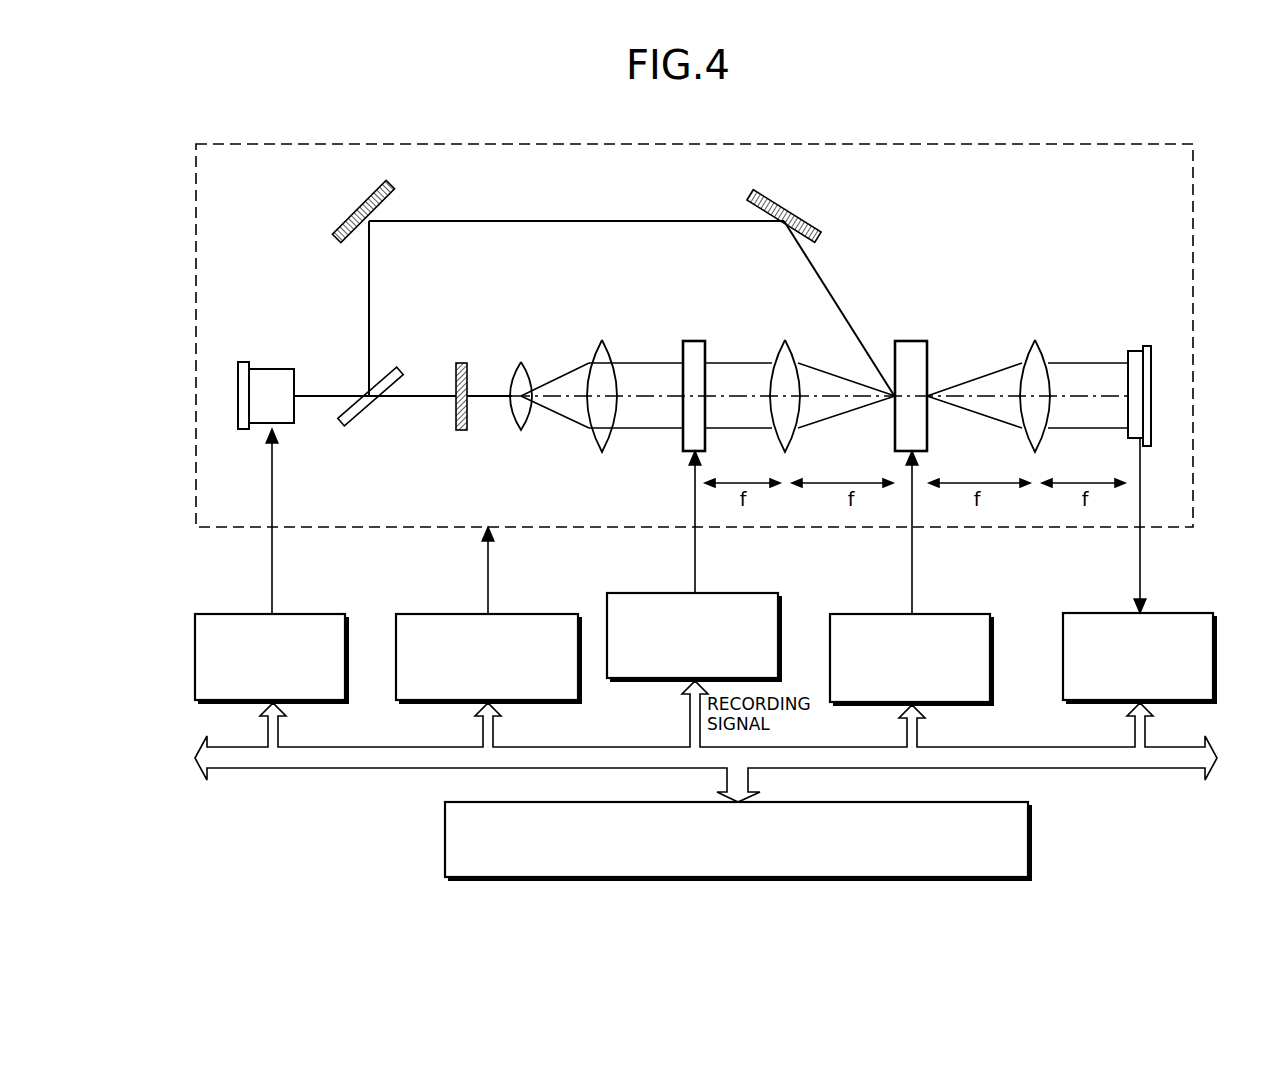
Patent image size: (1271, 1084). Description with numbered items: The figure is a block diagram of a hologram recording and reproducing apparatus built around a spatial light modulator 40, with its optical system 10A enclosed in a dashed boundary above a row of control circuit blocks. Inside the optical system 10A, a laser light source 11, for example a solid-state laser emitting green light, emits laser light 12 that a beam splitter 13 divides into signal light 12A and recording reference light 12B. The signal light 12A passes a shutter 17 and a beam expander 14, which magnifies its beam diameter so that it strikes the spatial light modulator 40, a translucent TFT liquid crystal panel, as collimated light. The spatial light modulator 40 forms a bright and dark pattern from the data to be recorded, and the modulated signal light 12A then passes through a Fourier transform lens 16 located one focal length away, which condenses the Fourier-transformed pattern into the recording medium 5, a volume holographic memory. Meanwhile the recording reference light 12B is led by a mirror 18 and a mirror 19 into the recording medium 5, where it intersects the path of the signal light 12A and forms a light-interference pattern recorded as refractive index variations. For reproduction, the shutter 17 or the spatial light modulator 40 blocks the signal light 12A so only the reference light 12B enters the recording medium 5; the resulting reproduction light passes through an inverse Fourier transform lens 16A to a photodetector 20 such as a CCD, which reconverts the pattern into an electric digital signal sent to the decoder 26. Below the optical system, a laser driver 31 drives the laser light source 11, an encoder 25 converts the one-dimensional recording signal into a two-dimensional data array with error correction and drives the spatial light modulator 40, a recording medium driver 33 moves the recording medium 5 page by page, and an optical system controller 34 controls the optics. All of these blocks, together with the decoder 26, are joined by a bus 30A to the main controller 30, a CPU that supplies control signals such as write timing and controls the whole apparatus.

The optical system 10A is at (1193, 198).
The laser light source 11 is at (272, 369).
The laser light 12 is at (330, 396).
The signal light 12A is at (404, 396).
The recording reference light 12B is at (622, 221).
The beam splitter 13 is at (348, 428).
The beam expander 14 is at (508, 332).
The Fourier transform lens 16 is at (790, 346).
The inverse Fourier transform lens 16A is at (1035, 340).
The shutter 17 is at (458, 363).
The mirror 18 is at (368, 190).
The mirror 19 is at (756, 194).
The photodetector 20 is at (1135, 351).
The recording medium 5 is at (914, 341).
The spatial light modulator 40 is at (683, 352).
The encoder 25 is at (742, 593).
The decoder 26 is at (1090, 613).
The main controller 30 is at (1031, 825).
The bus 30A is at (398, 768).
The laser driver 31 is at (310, 614).
The recording medium driver 33 is at (950, 614).
The optical system controller 34 is at (538, 614).